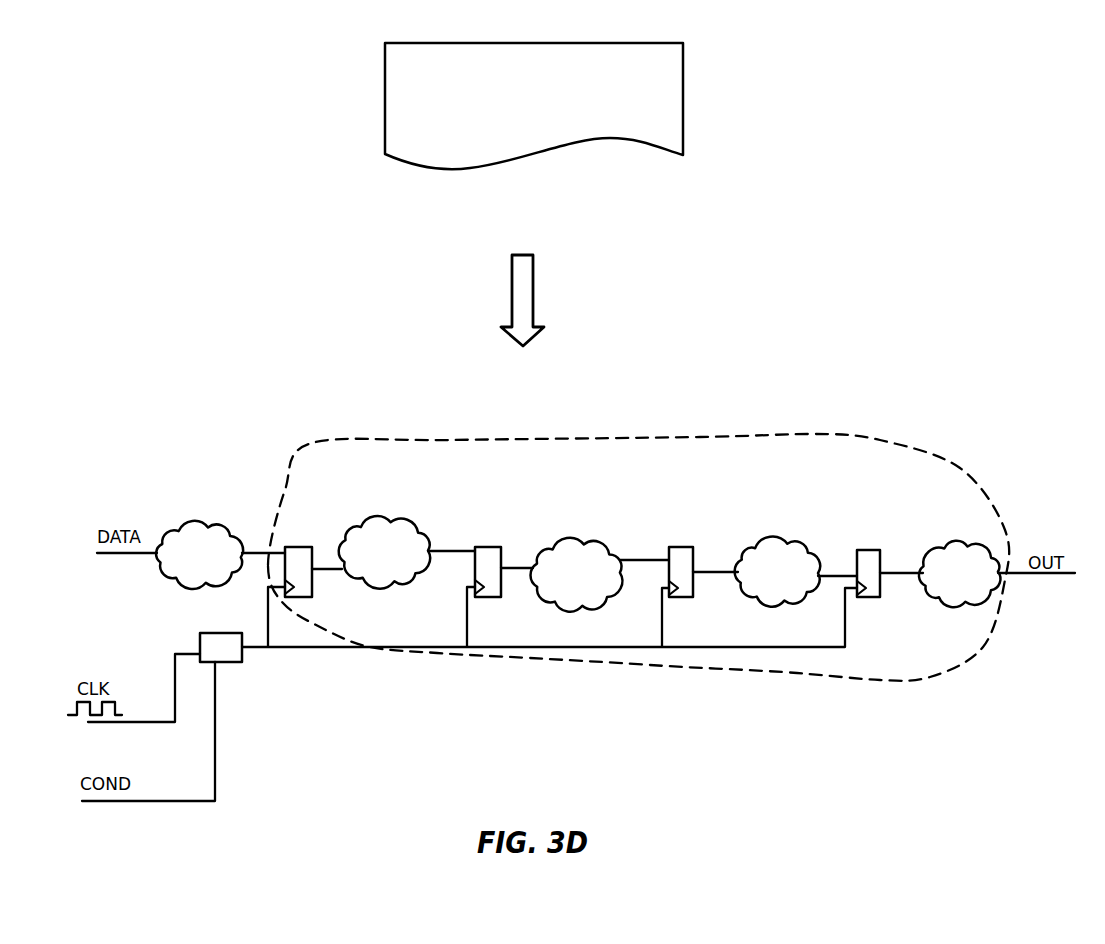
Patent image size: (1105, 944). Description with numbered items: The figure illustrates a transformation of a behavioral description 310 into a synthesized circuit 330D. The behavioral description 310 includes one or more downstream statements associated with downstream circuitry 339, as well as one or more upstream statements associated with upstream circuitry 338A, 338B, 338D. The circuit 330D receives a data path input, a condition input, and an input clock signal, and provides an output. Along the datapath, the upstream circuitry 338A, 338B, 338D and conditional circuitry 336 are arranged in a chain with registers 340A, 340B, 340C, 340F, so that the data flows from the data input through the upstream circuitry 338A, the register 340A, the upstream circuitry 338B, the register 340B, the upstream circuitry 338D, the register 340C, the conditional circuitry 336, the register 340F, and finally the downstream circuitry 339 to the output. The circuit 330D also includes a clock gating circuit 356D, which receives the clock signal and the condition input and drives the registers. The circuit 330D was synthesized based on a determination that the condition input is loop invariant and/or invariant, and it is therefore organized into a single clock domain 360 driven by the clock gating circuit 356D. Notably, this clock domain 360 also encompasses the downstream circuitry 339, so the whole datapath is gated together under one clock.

The behavioral description 310 is at (385, 118).
The circuit 330D is at (980, 336).
The clock domain 360 is at (732, 443).
The upstream circuitry 338A is at (215, 525).
The register 340A is at (294, 547).
The upstream circuitry 338B is at (382, 520).
The register 340B is at (487, 547).
The upstream circuitry 338D is at (588, 543).
The register 340C is at (682, 547).
The conditional circuitry 336 is at (781, 542).
The register 340F is at (866, 550).
The downstream circuitry 339 is at (940, 545).
The clock gating circuit 356D is at (218, 633).